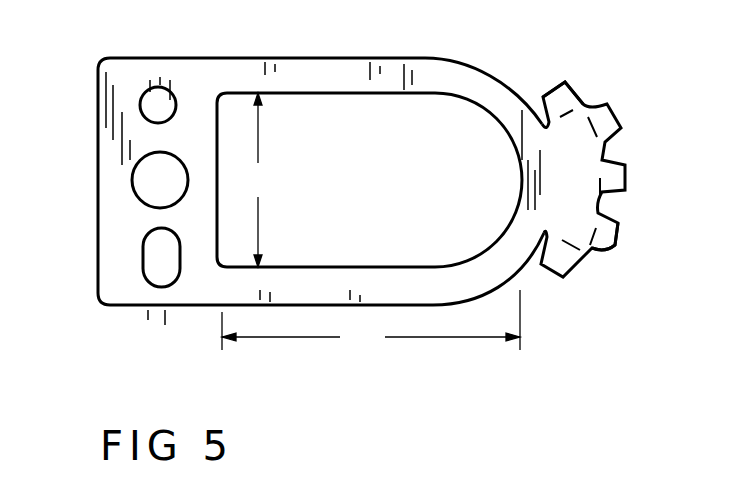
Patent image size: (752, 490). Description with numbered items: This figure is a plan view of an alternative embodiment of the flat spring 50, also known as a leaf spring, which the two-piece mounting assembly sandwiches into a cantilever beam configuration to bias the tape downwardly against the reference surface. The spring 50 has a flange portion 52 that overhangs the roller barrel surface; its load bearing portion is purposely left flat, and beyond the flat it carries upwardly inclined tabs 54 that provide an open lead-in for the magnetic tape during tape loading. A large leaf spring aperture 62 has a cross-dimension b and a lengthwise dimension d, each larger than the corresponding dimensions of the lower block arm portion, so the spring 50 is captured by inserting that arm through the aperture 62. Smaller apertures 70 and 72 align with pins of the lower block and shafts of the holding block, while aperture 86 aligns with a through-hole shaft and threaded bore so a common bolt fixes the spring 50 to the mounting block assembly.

The flat spring 50 is at (468, 48).
The flange portion 52 is at (575, 183).
The upwardly inclined tabs 54 is at (605, 125).
The leaf spring aperture 62 is at (386, 197).
The aperture 70 is at (152, 105).
The aperture 86 is at (152, 182).
The aperture 72 is at (155, 260).